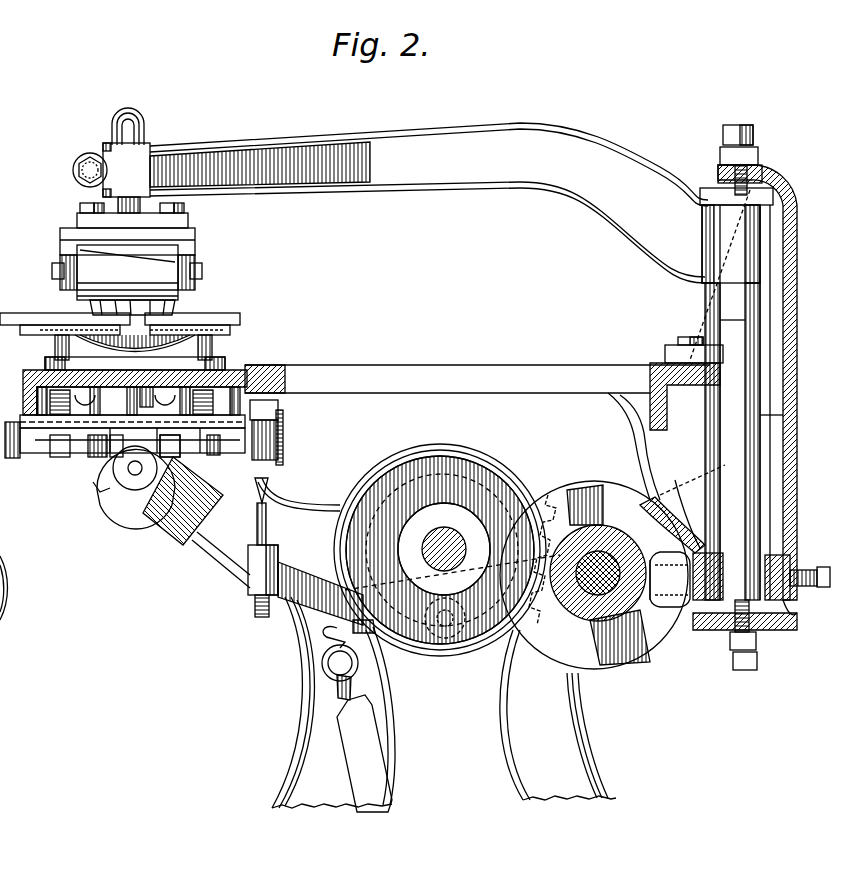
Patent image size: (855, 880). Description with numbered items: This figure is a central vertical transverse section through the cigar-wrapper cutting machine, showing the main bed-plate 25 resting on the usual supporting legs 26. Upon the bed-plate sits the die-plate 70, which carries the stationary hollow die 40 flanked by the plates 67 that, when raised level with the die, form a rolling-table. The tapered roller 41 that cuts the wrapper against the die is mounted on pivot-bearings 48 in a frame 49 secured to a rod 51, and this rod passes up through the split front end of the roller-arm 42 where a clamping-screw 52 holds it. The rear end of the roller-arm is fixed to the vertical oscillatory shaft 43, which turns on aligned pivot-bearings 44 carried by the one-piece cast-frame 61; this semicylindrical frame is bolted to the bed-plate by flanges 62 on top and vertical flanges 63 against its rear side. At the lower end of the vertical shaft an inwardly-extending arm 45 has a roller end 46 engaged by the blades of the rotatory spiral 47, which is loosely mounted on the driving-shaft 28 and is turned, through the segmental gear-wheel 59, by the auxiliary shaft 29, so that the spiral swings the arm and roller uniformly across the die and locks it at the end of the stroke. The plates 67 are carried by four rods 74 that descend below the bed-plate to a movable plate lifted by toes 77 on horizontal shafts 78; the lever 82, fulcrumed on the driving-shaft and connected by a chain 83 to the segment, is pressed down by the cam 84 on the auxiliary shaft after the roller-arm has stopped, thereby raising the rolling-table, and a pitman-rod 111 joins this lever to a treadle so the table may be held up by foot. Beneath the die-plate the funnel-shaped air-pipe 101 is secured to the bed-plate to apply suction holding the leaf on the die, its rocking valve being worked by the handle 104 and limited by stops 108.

The main bed-plate 25 is at (398, 368).
The supporting legs 26 is at (449, 702).
The driving-shaft 28 is at (585, 600).
The auxiliary shaft 29 is at (443, 548).
The die 40 is at (176, 303).
The roller 41 is at (127, 272).
The roller-arm 42 is at (455, 203).
The vertical oscillatory shaft 43 is at (790, 322).
The pivot-bearings 44 is at (760, 160).
The inwardly-extending arm 45 is at (790, 567).
The roller end 46 is at (663, 553).
The rotatory spiral 47 is at (594, 575).
The pivot-bearings 48 is at (52, 270).
The frame 49 is at (186, 235).
The rod 51 is at (146, 124).
The clamping-screw 52 is at (78, 180).
The segmental gear-wheel 59 is at (540, 495).
The cast-frame 61 is at (785, 403).
The flanges 62 is at (680, 350).
The vertical flanges 63 is at (785, 425).
The plates 67 is at (243, 304).
The plate 70 is at (225, 363).
The rods 74 is at (55, 350).
The toes 77 is at (115, 460).
The horizontal shafts 78 is at (88, 458).
The lever 82 is at (312, 603).
The chain 83 is at (270, 487).
The cam 84 is at (350, 553).
The air-pipe 101 is at (165, 530).
The handle 104 is at (135, 476).
The stops 108 is at (99, 496).
The pitman-rod 111 is at (356, 778).